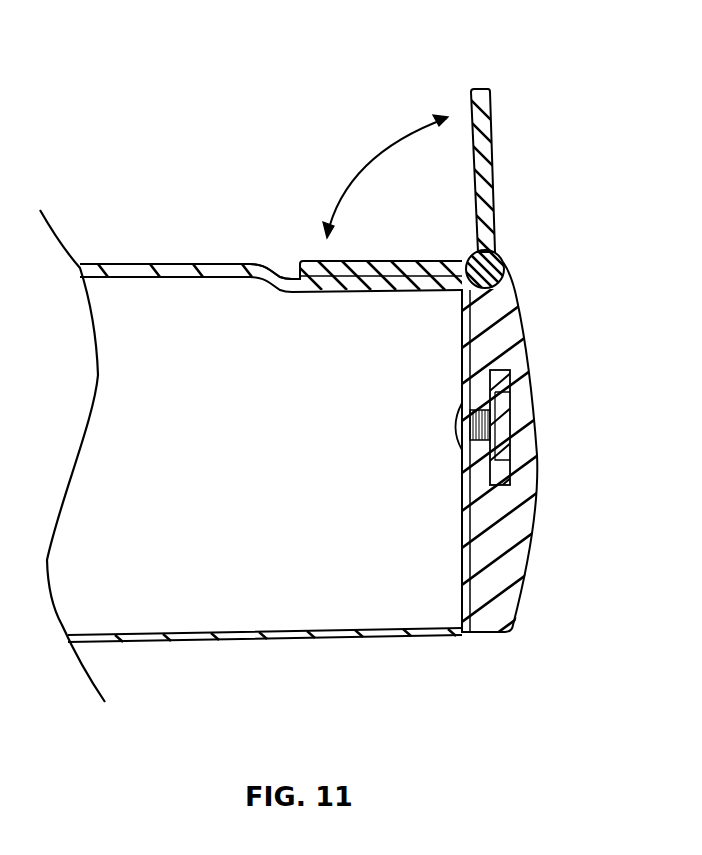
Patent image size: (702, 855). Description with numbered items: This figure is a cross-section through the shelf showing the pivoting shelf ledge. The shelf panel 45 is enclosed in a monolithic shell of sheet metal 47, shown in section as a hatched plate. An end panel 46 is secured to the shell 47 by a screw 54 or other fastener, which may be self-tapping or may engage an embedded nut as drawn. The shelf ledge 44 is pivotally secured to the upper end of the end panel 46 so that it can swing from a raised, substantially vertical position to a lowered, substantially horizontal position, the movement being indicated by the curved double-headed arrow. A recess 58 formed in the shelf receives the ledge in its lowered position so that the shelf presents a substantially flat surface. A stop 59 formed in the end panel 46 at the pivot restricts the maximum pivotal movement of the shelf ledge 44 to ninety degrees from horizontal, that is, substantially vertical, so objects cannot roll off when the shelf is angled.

The shelf ledge 44 is at (478, 88).
The shelf panel 45 is at (139, 302).
The end panel 46 is at (538, 522).
The sheet metal shell 47 is at (217, 268).
The screw 54 is at (452, 426).
The recess 58 is at (332, 292).
The stop 59 is at (498, 251).